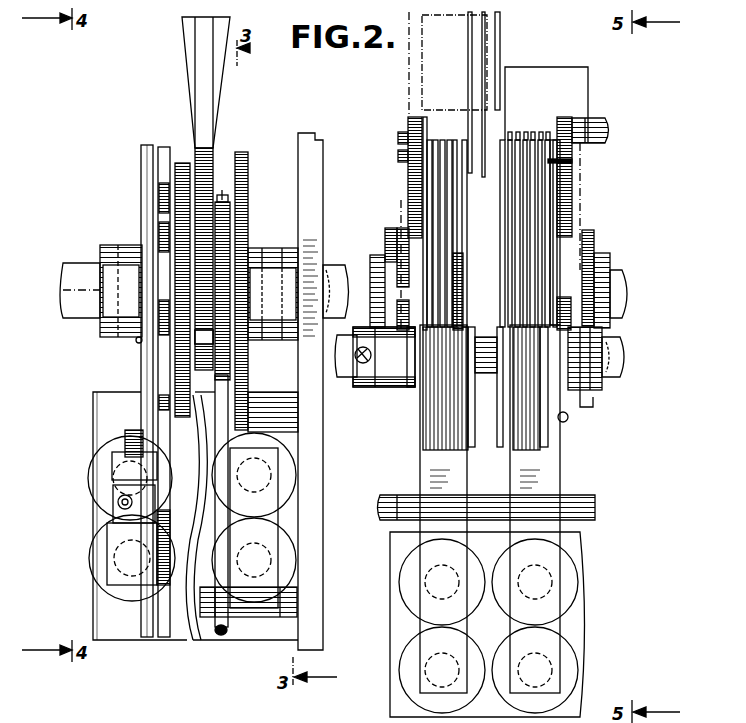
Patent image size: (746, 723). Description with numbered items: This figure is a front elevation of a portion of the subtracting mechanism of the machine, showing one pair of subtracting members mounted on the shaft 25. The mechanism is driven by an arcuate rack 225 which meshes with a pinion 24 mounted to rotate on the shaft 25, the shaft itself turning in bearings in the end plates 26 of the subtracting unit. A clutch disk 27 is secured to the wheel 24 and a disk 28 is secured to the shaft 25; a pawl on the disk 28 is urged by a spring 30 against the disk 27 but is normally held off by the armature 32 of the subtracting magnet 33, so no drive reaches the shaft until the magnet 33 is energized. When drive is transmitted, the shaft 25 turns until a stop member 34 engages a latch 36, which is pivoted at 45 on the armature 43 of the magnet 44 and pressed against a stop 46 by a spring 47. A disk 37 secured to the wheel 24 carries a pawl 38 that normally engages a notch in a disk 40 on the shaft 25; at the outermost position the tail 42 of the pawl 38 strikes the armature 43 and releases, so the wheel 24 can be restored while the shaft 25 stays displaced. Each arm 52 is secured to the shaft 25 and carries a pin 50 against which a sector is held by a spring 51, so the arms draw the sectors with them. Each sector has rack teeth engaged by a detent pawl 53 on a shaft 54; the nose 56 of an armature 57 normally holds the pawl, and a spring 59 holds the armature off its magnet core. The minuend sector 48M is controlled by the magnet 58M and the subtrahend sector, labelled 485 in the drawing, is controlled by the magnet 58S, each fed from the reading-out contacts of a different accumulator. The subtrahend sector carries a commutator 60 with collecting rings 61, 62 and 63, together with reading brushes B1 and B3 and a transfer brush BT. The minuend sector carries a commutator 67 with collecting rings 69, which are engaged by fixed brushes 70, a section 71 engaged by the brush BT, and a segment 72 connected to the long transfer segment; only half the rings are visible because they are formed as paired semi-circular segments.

The pinion 24 is at (222, 227).
The shaft 25 is at (338, 268).
The end plates 26 is at (310, 425).
The clutch disk 27 is at (224, 248).
The disk 28 is at (248, 157).
The spring 30 is at (228, 197).
The armature 32 is at (222, 388).
The subtracting magnet 33 is at (285, 477).
The stop member 34 is at (141, 146).
The latch 36 is at (142, 410).
The disk 37 is at (182, 163).
The pawl 38 is at (165, 194).
The disk 40 is at (165, 235).
The tail 42 is at (163, 148).
The armature 43 is at (165, 469).
The magnet 44 is at (100, 557).
The pivot 45 is at (125, 434).
The stop 46 is at (137, 339).
The spring 47 is at (117, 501).
The minuend sector 48M is at (573, 128).
The pin 50 is at (610, 340).
The spring 51 is at (581, 214).
The arm 52 is at (594, 252).
The detent pawl 53 is at (565, 317).
The shaft 54 is at (615, 369).
The nose 56 is at (588, 402).
The armature 57 is at (545, 468).
The subtrahend control magnet 58S is at (400, 588).
The minuend control magnet 58M is at (570, 593).
The spring 59 is at (567, 420).
The electric commutator 60 is at (443, 135).
The collecting ring 61 is at (450, 140).
The collecting ring 62 is at (404, 146).
The collecting ring 63 is at (406, 165).
The commutator 67 is at (487, 197).
The collecting rings 69 is at (512, 184).
The fixed brushes 70 is at (541, 132).
The section 71 is at (487, 425).
The segment 72 is at (572, 160).
The arcuate rack 225 is at (204, 148).
The gear 485 is at (418, 184).
The transfer brush BT is at (470, 31).
The reading brush B1 is at (483, 52).
The reading brush B3 is at (497, 70).